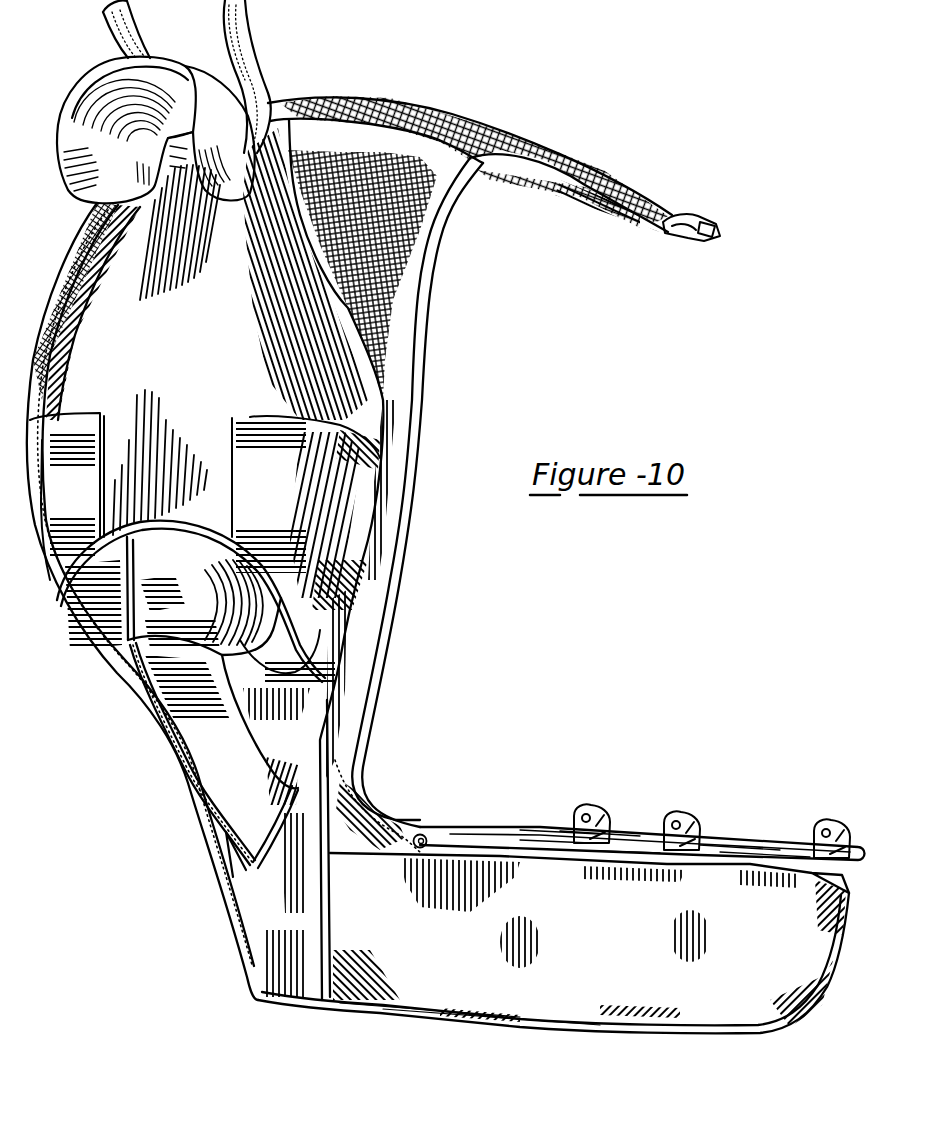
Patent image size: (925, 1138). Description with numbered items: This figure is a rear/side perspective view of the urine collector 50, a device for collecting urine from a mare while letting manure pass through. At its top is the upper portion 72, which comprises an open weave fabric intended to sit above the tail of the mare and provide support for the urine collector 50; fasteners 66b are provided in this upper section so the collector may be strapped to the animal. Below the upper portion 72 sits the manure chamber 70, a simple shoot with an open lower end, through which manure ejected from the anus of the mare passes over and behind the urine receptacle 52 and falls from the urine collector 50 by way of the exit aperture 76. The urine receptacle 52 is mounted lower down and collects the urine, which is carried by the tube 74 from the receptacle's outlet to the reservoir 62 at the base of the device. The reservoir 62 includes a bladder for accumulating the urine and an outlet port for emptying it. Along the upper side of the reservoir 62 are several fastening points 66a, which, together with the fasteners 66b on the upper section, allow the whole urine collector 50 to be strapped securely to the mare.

The urine collector 50 is at (380, 745).
The urine receptacle 52 is at (205, 609).
The reservoir 62 is at (598, 994).
The fastening points 66a is at (822, 826).
The fasteners 66b is at (694, 217).
The manure chamber 70 is at (190, 367).
The upper portion 72 is at (432, 112).
The tube 74 is at (213, 732).
The exit aperture 76 is at (298, 669).